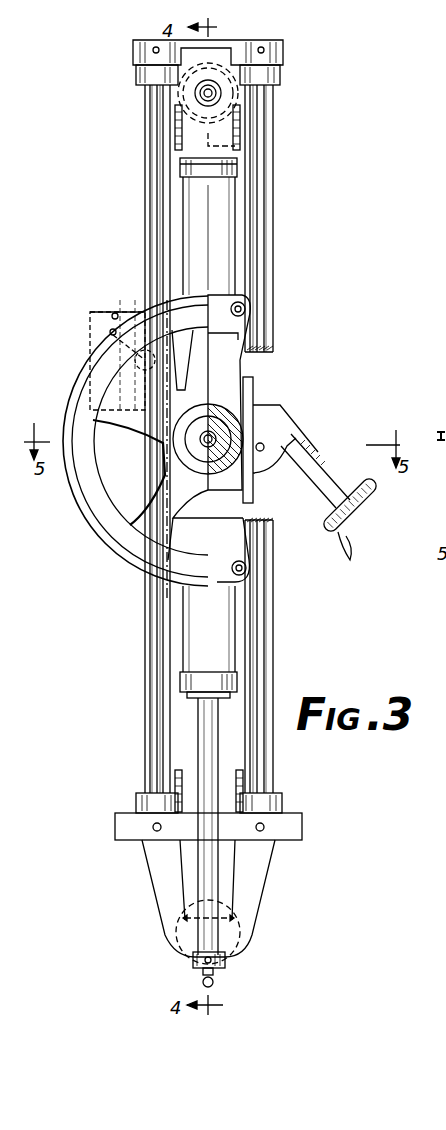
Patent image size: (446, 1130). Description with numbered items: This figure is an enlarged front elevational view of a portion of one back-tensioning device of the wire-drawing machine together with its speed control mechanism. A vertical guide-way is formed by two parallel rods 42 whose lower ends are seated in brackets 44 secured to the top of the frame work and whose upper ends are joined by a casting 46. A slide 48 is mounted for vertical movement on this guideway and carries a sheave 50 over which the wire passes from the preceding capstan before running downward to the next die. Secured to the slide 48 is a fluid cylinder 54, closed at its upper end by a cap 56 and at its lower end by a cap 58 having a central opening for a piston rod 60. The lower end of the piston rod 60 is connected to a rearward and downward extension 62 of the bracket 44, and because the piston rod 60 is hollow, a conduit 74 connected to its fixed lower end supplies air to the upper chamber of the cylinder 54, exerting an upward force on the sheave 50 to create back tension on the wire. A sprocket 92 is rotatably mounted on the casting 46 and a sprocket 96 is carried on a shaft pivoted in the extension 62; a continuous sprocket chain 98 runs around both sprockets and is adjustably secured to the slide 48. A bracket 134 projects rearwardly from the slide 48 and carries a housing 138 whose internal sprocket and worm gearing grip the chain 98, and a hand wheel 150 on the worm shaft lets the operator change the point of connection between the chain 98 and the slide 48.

The rods 42 is at (152, 118).
The brackets 44 is at (285, 825).
The casting 46 is at (231, 44).
The slide 48 is at (228, 372).
The sheave 50 is at (95, 527).
The fluid cylinder 54 is at (217, 253).
The cap 56 is at (228, 168).
The cap 58 is at (228, 680).
The piston rod 60 is at (208, 728).
The rearward and downward extension 62 is at (263, 884).
The conduit 74 is at (216, 983).
The sprocket 92 is at (228, 95).
The sprocket 96 is at (226, 963).
The sprocket chain 98 is at (180, 135).
The bracket 134 is at (250, 395).
The housing 138 is at (290, 432).
The hand wheel 150 is at (368, 500).